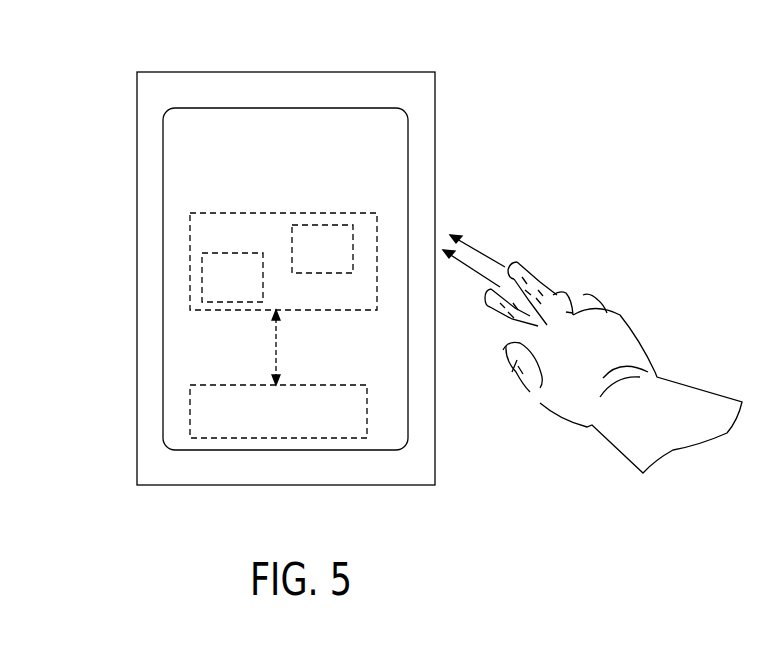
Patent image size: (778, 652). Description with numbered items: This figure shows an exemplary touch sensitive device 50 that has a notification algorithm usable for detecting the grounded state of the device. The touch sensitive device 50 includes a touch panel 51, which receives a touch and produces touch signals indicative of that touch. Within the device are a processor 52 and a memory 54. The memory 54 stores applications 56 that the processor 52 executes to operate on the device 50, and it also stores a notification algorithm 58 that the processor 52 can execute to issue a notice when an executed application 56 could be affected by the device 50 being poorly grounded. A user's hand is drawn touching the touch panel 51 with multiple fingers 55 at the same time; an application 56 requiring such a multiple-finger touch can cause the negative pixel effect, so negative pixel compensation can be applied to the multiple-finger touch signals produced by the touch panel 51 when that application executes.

The touch sensitive device 50 is at (400, 72).
The touch panel 51 is at (408, 161).
The processor 52 is at (193, 417).
The memory 54 is at (192, 240).
The fingers 55 is at (623, 313).
The application 56 is at (357, 249).
The notification algorithm 58 is at (192, 282).